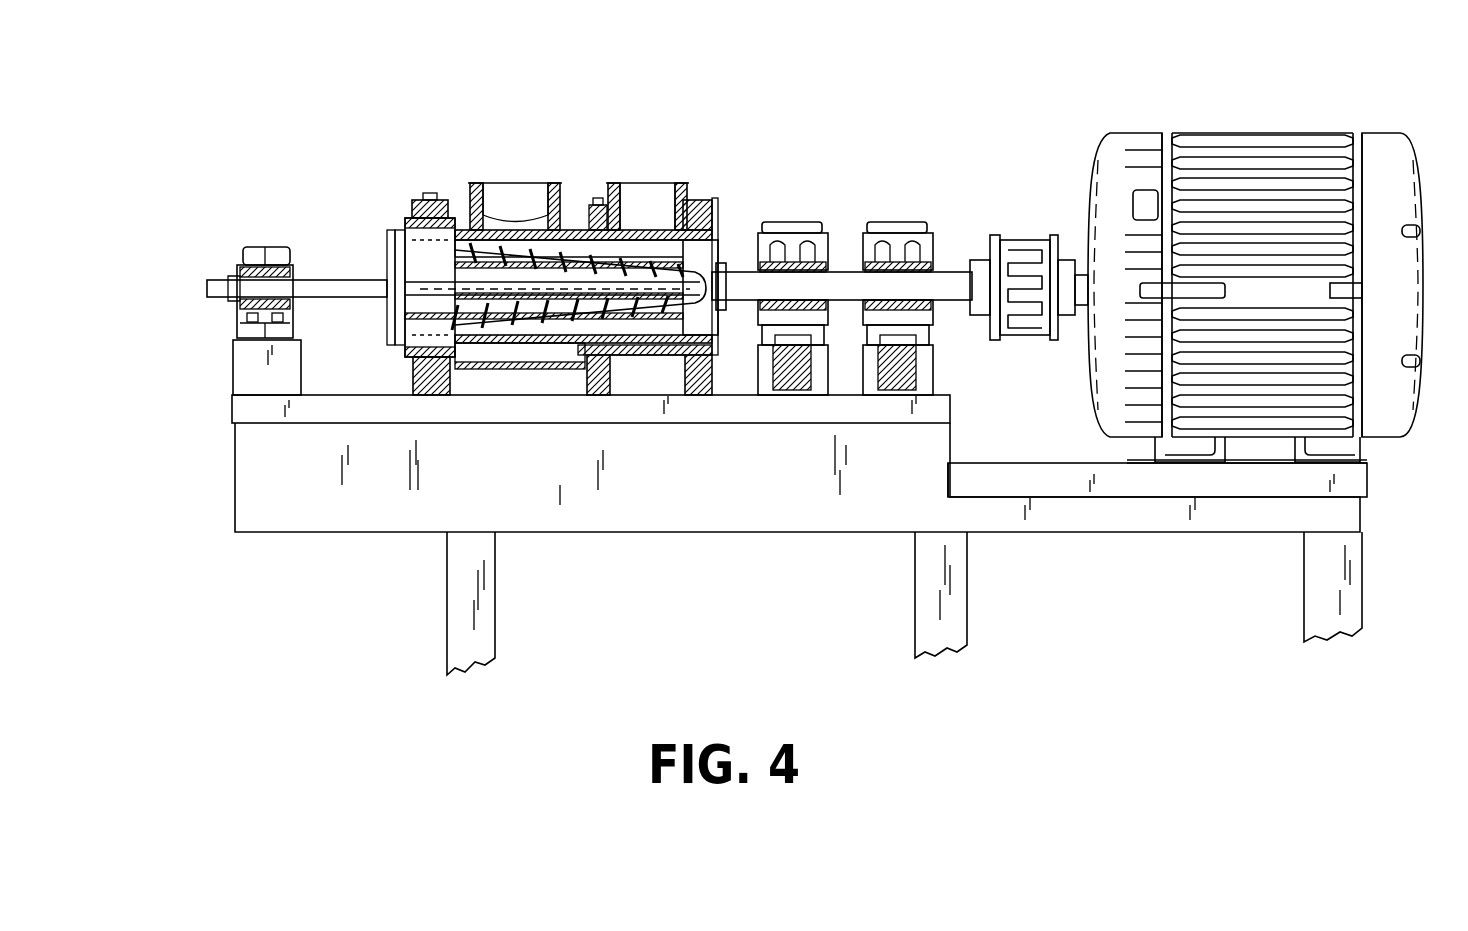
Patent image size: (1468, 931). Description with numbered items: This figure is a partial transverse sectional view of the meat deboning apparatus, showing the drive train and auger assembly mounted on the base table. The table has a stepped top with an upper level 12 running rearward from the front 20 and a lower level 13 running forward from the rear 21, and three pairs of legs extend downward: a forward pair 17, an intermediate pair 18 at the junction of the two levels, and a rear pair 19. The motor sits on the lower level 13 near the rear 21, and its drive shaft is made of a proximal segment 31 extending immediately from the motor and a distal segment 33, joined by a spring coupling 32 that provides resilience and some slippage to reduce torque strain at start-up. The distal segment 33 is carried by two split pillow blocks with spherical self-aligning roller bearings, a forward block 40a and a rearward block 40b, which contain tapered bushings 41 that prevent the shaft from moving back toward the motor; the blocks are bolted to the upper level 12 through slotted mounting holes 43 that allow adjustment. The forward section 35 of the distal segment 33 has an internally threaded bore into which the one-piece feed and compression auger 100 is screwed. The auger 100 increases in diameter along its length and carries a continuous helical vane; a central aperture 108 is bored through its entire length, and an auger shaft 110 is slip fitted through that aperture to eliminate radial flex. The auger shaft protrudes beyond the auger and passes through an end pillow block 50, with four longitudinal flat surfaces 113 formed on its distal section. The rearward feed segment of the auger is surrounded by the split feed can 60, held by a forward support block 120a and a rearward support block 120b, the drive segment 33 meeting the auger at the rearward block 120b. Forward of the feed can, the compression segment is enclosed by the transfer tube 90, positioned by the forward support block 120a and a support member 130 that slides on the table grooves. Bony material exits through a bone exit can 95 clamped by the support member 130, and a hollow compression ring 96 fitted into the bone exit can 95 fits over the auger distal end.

The upper level 12 is at (250, 392).
The lower level 13 is at (977, 462).
The forward pair of legs 17 is at (497, 607).
The intermediate pair of legs 18 is at (967, 595).
The rear pair of legs 19 is at (1362, 575).
The front 20 is at (235, 476).
The rear 21 is at (1367, 484).
The proximal segment 31 is at (1080, 305).
The spring coupling 32 is at (1012, 235).
The distal segment 33 is at (847, 268).
The forward section 35 is at (738, 268).
The forward block 40a is at (773, 222).
The rearward block 40b is at (880, 222).
The tapered bushings 41 is at (797, 235).
The slotted mounting holes 43 is at (770, 385).
The end pillow block 50 is at (250, 248).
The split feed can 60 is at (646, 93).
The transfer tube 90 is at (510, 93).
The bone exit can 95 is at (417, 332).
The hollow compression ring 96 is at (385, 318).
The feed and compression auger 100 is at (485, 325).
The central aperture 108 is at (462, 210).
The auger shaft 110 is at (392, 338).
The longitudinal flat surfaces 113 is at (355, 278).
The forward support block 120a is at (592, 200).
The rearward support block 120b is at (700, 198).
The support member 130 is at (420, 200).